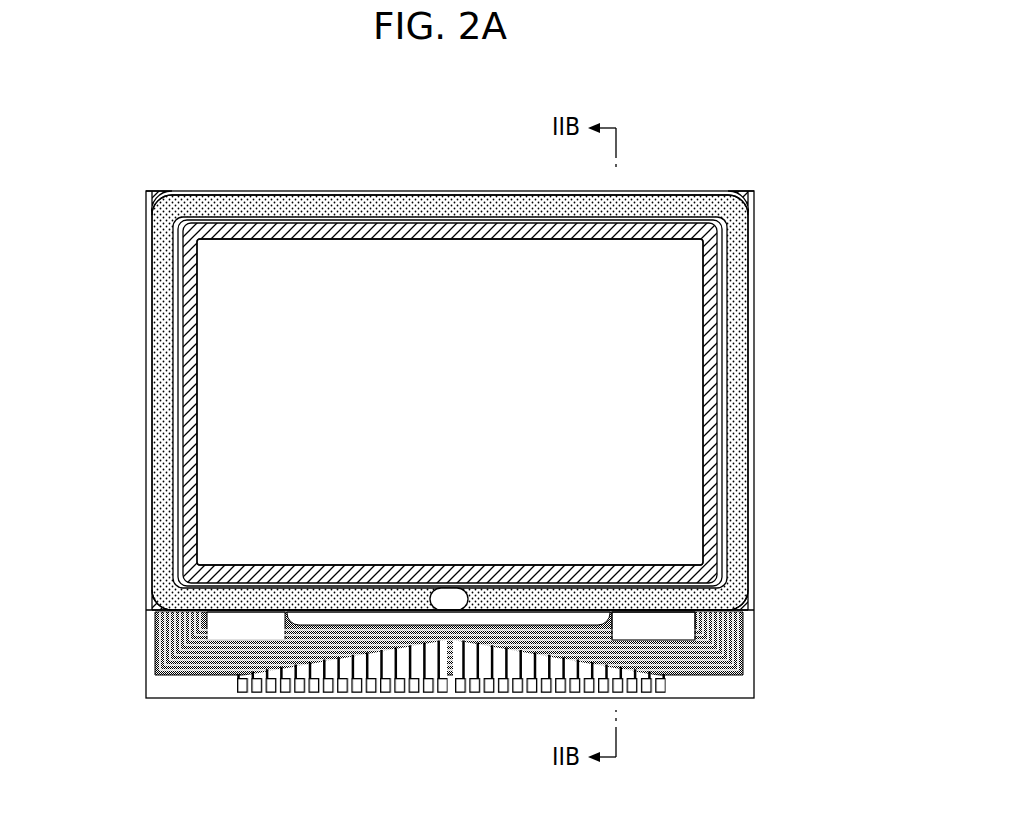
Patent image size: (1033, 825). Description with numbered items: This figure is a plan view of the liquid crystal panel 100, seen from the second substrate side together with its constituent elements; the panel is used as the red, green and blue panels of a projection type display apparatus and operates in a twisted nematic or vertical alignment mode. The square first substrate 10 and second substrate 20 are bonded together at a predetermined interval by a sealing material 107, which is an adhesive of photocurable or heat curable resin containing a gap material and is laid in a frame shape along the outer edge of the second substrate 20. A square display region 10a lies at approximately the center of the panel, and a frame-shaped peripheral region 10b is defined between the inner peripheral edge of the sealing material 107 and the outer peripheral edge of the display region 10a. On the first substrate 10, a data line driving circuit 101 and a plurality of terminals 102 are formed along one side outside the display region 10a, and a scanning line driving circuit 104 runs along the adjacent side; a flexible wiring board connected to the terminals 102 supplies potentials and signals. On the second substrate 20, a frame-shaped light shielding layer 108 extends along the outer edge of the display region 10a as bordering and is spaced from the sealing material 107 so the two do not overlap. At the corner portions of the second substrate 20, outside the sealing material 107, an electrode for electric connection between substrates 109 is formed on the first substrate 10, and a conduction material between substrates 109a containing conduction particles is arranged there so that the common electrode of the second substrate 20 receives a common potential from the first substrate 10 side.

The liquid crystal panel 100 is at (431, 418).
The first substrate 10 is at (188, 700).
The display region 10a is at (430, 300).
The peripheral region 10b is at (652, 450).
The second substrate 20 is at (275, 605).
The data line driving circuit 101 is at (673, 628).
The terminals 102 is at (458, 692).
The scanning line driving circuit 104 is at (718, 481).
The sealing material 107 is at (737, 372).
The light shielding layer 108 is at (718, 303).
The electrode for electric connection between substrates 109 is at (431, 432).
The conduction material between substrates 109a is at (152, 190).